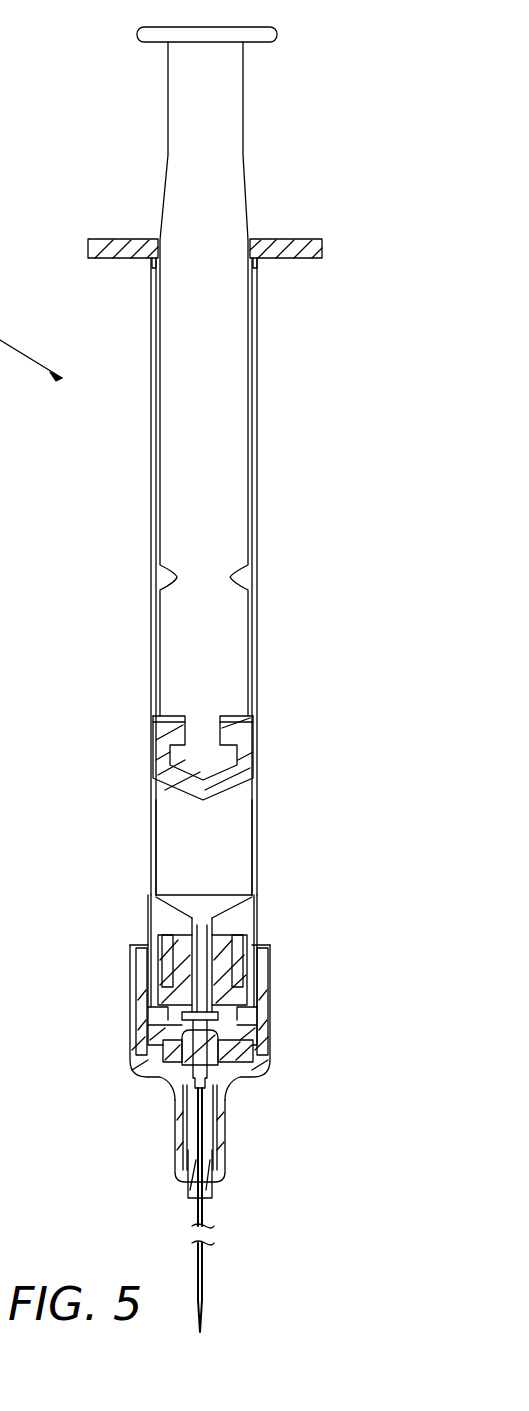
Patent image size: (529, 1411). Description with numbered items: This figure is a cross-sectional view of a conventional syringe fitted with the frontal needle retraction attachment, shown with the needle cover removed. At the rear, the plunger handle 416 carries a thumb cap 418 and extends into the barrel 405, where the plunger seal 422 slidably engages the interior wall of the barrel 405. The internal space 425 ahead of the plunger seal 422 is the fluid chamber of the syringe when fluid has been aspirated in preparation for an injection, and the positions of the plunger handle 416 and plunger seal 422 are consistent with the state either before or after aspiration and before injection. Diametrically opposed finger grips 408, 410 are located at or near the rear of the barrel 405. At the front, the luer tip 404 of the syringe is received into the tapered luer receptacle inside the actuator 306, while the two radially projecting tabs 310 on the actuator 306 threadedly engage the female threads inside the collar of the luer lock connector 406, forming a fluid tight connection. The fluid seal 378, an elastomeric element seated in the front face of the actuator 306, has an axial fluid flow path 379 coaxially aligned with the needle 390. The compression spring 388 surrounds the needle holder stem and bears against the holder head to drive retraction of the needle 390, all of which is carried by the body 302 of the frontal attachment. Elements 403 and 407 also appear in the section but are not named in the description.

The thumb cap 418 is at (150, 34).
The plunger handle 416 is at (235, 180).
The finger grip 408 is at (125, 245).
The finger grip 410 is at (295, 245).
The barrel 405 is at (255, 525).
The plunger seal 422 is at (200, 802).
The internal space 425 is at (228, 835).
The barrel tip / luer neck 403 is at (200, 935).
The luer lock connector 406 is at (155, 940).
The luer tip 404 is at (240, 920).
The hub thread 407 is at (243, 955).
The tabs 310 is at (140, 958).
The body 302 is at (124, 1076).
The actuator 306 is at (165, 1015).
The fluid seal 378 is at (230, 1025).
The axial fluid flow path 379 is at (212, 1060).
The spring 388 is at (220, 1155).
The needle 390 is at (180, 1210).